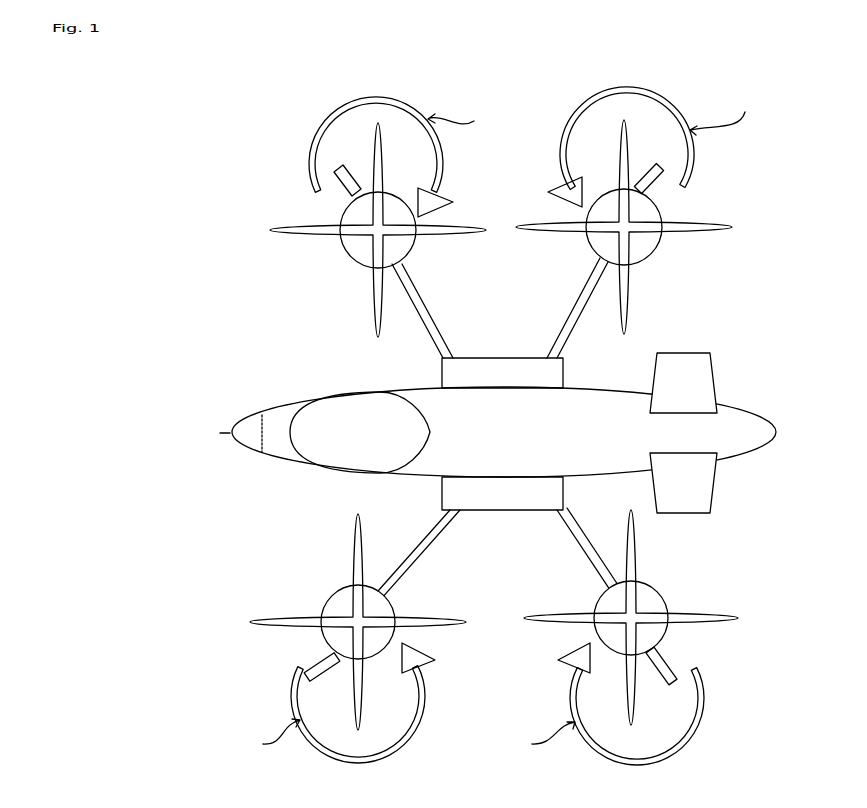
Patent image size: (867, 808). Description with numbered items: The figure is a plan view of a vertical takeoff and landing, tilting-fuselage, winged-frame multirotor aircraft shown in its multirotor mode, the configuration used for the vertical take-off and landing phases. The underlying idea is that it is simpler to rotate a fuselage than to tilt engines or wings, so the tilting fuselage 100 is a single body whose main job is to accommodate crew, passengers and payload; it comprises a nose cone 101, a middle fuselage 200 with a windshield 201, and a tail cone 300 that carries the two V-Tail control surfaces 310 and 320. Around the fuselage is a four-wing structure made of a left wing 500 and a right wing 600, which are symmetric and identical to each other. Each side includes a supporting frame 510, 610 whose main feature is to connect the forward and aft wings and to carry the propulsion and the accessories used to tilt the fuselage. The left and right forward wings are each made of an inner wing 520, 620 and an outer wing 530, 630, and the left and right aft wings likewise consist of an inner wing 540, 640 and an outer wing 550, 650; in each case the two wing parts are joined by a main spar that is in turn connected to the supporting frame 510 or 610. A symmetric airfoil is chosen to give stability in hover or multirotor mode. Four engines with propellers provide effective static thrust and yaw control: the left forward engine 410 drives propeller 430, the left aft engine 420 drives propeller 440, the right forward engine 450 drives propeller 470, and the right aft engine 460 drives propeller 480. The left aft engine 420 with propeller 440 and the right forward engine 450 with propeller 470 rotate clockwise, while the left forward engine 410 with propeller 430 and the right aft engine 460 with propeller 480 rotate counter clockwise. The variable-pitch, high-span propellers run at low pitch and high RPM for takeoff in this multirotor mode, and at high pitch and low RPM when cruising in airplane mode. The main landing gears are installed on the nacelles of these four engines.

The tilting fuselage 100 is at (321, 371).
The nose cone 101 is at (247, 418).
The middle fuselage 200 is at (409, 484).
The windshield 201 is at (365, 408).
The tail cone 300 is at (720, 427).
The V-Tail control surface 310 is at (690, 503).
The V-Tail control surface 320 is at (663, 363).
The left forward engine 410 is at (338, 605).
The left aft engine 420 is at (653, 600).
The propeller 430 is at (280, 625).
The propeller 440 is at (667, 617).
The right forward engine 450 is at (362, 251).
The right aft engine 460 is at (640, 243).
The propeller 470 is at (300, 228).
The propeller 480 is at (690, 223).
The left wing 500 is at (504, 524).
The supporting frame 510 is at (550, 493).
The inner wing 520 is at (400, 570).
The outer wing 530 is at (320, 670).
The inner wing 540 is at (592, 570).
The outer wing 550 is at (670, 683).
The right wing 600 is at (507, 345).
The supporting frame 610 is at (563, 362).
The inner wing 620 is at (422, 293).
The outer wing 630 is at (355, 188).
The inner wing 640 is at (587, 288).
The outer wing 650 is at (655, 160).